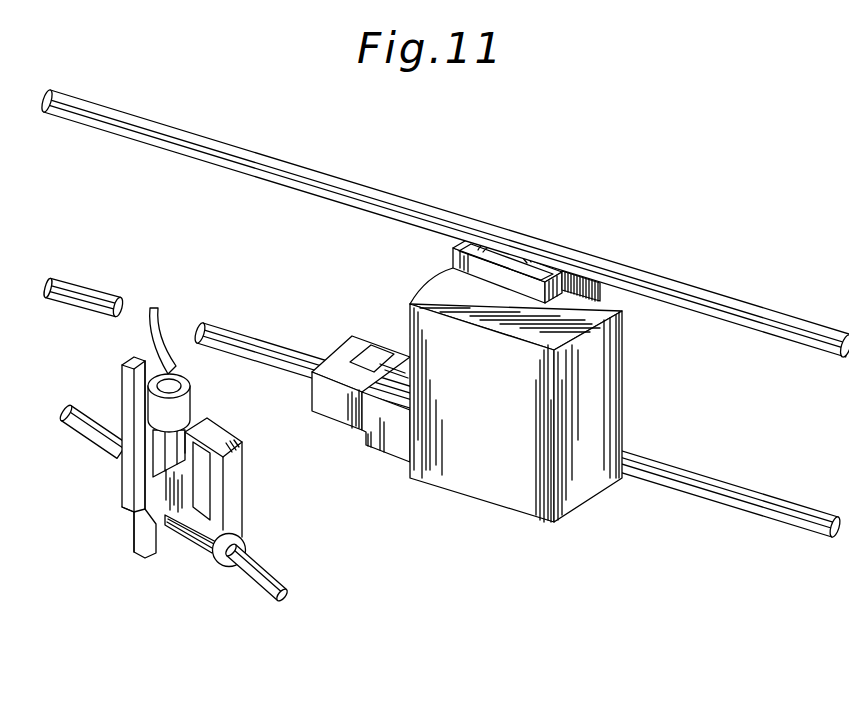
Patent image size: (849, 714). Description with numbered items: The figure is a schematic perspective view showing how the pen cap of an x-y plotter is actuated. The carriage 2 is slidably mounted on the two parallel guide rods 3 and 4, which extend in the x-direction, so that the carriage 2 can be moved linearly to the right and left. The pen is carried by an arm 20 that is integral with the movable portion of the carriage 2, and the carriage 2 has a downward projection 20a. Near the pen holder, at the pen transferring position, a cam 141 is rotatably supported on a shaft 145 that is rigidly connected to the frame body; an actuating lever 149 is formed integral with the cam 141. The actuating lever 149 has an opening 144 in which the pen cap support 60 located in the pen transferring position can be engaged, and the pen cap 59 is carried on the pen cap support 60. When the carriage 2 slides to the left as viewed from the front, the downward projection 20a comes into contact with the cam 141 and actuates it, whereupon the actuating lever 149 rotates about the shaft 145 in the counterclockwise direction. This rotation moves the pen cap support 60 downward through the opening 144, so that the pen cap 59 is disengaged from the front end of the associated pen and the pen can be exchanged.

The carriage 2 is at (523, 300).
The guide rod 3 is at (770, 322).
The guide rod 4 is at (738, 496).
The arm 20 is at (333, 406).
The downward projection 20a is at (372, 448).
The pen cap 59 is at (191, 388).
The pen cap support 60 is at (165, 505).
The cam 141 is at (156, 305).
The opening 144 is at (212, 492).
The shaft 145 is at (278, 584).
The actuating lever 149 is at (222, 433).